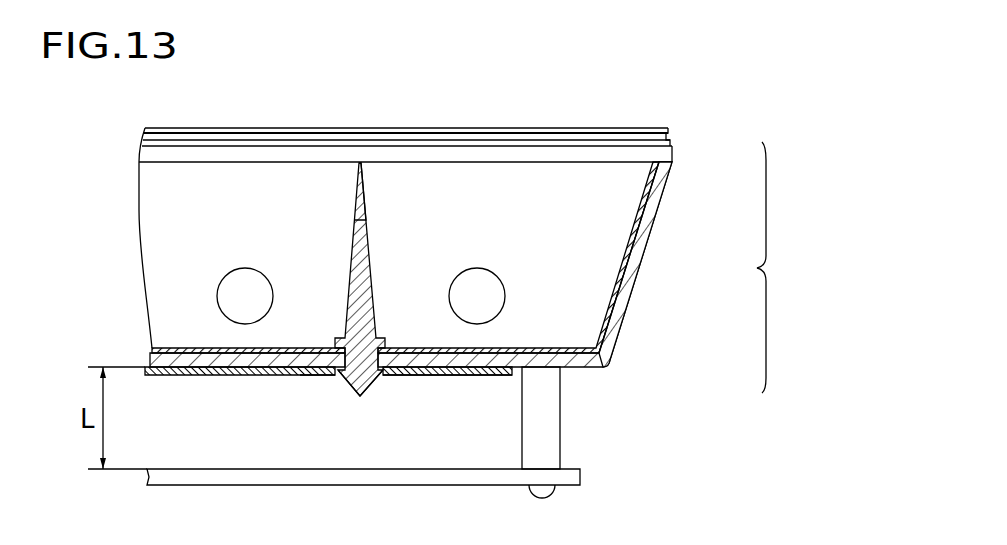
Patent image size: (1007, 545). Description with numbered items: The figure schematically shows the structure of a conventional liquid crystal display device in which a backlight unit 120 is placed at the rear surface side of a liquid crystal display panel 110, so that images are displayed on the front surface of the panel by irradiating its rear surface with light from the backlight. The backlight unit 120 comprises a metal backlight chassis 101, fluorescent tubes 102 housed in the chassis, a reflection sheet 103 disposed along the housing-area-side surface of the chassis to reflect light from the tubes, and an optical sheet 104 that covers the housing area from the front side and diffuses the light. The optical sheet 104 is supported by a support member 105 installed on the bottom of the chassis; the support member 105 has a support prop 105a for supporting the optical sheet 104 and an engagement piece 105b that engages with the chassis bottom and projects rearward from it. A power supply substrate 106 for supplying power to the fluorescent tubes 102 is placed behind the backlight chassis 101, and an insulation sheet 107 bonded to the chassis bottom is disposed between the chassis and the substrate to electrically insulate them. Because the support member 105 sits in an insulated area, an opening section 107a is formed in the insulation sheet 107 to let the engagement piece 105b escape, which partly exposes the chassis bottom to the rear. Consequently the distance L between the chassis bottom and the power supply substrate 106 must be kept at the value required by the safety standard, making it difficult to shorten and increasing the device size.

The liquid crystal display panel 110 is at (670, 132).
The optical sheet 104 is at (670, 154).
The backlight chassis 101 is at (645, 232).
The reflection sheet 103 is at (633, 281).
The fluorescent tubes 102 is at (240, 268).
The support member 105 is at (350, 210).
The support prop 105a is at (366, 216).
The engagement piece 105b is at (364, 396).
The insulation sheet 107 is at (209, 376).
The opening section 107a is at (322, 378).
The power supply substrate 106 is at (580, 477).
The backlight unit 120 is at (789, 267).